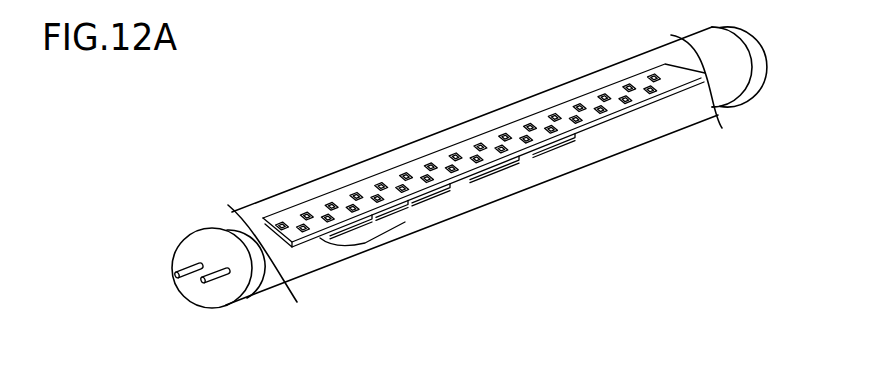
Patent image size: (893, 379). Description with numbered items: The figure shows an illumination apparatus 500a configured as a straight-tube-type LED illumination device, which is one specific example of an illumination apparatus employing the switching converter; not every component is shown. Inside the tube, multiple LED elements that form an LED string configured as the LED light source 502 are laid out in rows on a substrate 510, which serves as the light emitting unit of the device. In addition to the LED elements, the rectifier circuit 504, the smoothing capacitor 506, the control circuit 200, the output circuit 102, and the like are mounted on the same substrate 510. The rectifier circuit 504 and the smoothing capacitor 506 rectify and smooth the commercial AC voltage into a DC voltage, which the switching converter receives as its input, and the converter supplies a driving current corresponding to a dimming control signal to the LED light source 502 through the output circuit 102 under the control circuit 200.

The illumination apparatus 500a is at (469, 199).
The LED light source 502 is at (456, 152).
The rectifier circuit 504 is at (447, 212).
The smoothing capacitor 506 is at (405, 222).
The control circuit 200 is at (480, 160).
The output circuit 102 is at (567, 147).
The substrate 510 is at (684, 93).